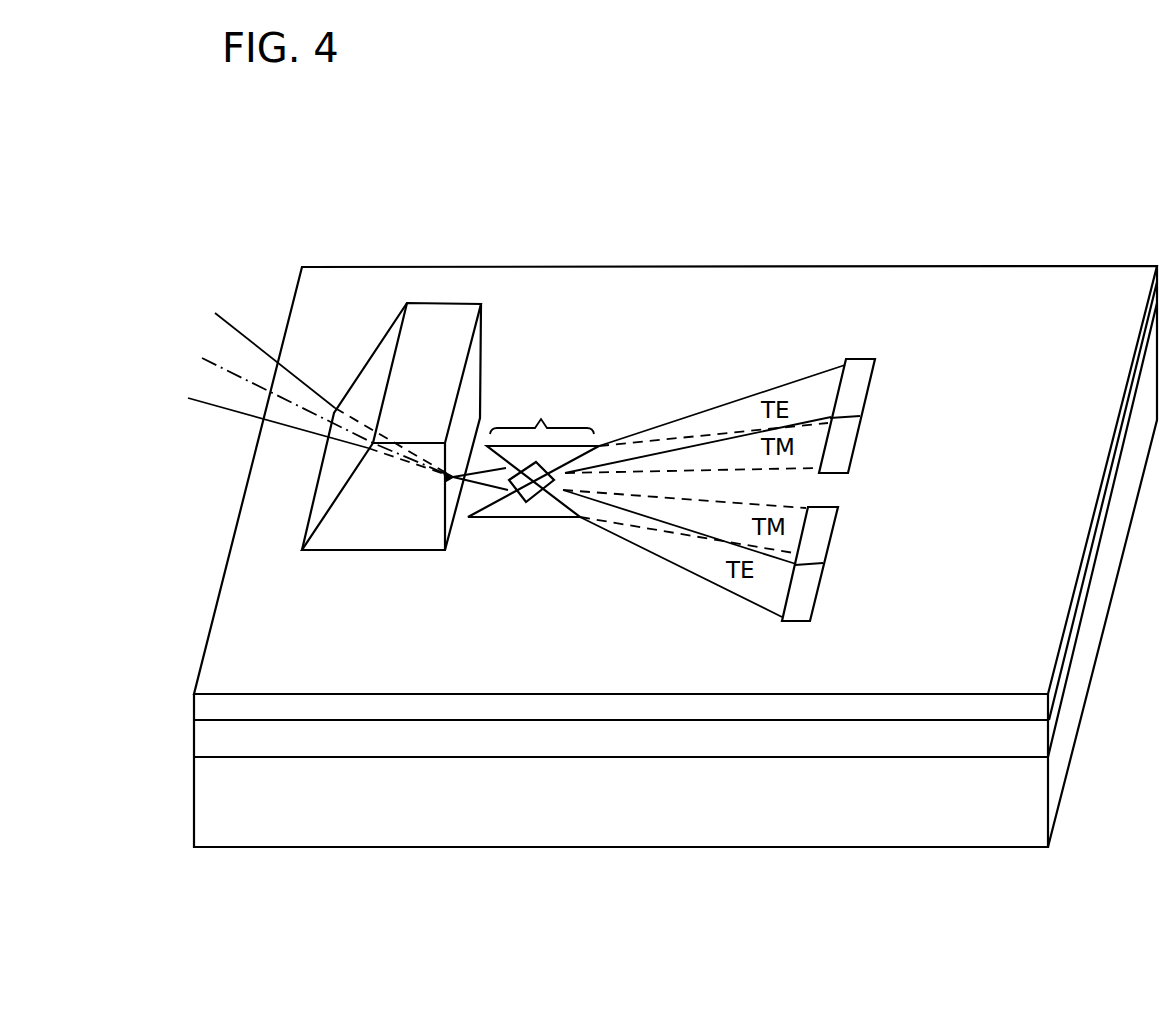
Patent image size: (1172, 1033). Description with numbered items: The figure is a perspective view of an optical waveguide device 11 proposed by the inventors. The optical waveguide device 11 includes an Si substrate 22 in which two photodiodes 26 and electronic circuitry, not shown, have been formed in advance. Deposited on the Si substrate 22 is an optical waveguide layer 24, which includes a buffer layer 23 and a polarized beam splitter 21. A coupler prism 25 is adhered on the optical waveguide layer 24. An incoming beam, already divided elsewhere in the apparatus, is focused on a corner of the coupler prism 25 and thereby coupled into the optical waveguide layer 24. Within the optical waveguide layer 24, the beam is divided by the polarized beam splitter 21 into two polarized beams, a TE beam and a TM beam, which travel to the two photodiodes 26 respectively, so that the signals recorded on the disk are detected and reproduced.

The optical waveguide device 11 is at (652, 258).
The polarized beam splitter 21 is at (541, 410).
The Si substrate 22 is at (1037, 787).
The buffer layer 23 is at (1038, 732).
The optical waveguide layer 24 is at (1037, 707).
The coupler prism 25 is at (443, 318).
The photodiodes 26 is at (847, 441).